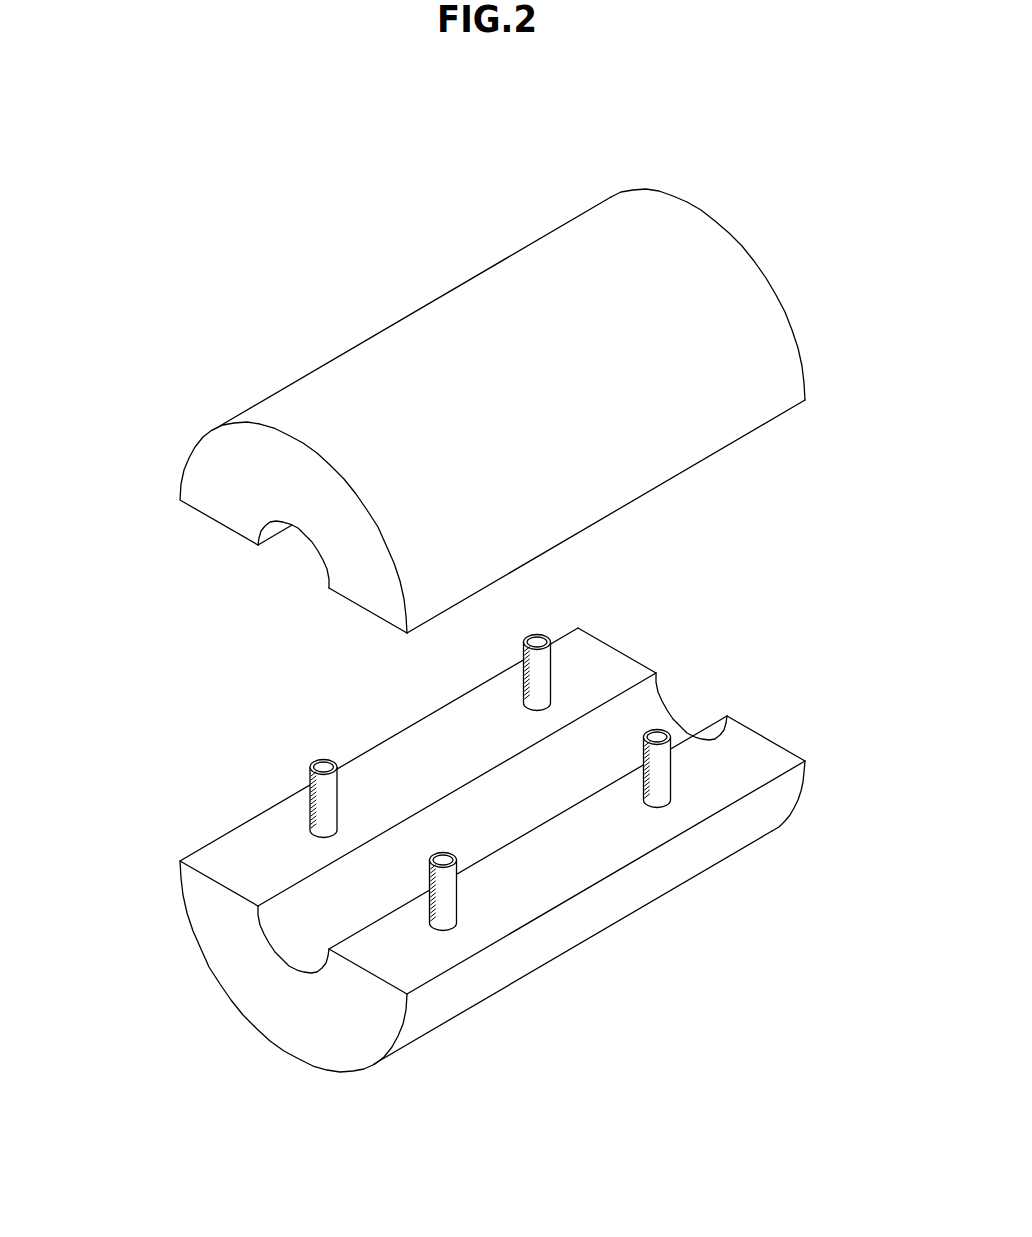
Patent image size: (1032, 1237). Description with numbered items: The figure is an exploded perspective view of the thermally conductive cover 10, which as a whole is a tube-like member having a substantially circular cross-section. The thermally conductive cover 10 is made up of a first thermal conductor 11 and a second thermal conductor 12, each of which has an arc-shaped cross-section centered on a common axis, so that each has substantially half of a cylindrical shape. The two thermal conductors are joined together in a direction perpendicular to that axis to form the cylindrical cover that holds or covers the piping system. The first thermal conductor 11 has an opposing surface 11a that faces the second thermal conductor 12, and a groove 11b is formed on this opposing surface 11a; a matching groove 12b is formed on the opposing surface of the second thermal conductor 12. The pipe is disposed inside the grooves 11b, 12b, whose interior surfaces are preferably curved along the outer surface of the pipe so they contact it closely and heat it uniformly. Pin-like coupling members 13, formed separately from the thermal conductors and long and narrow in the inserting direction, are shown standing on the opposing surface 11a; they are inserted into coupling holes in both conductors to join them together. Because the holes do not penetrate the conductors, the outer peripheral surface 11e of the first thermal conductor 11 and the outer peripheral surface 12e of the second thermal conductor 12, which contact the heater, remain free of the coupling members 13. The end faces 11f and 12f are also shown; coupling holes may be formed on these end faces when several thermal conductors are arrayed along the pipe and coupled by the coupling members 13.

The thermally conductive cover 10 is at (792, 242).
The first thermal conductor 11 is at (178, 910).
The opposing surface 11a is at (400, 968).
The groove 11b is at (312, 953).
The outer peripheral surface 11e is at (571, 938).
The end face 11f is at (205, 925).
The second thermal conductor 12 is at (245, 388).
The groove 12b is at (298, 533).
The outer peripheral surface 12e is at (679, 222).
The end face 12f is at (240, 464).
The coupling members 13 is at (328, 762).